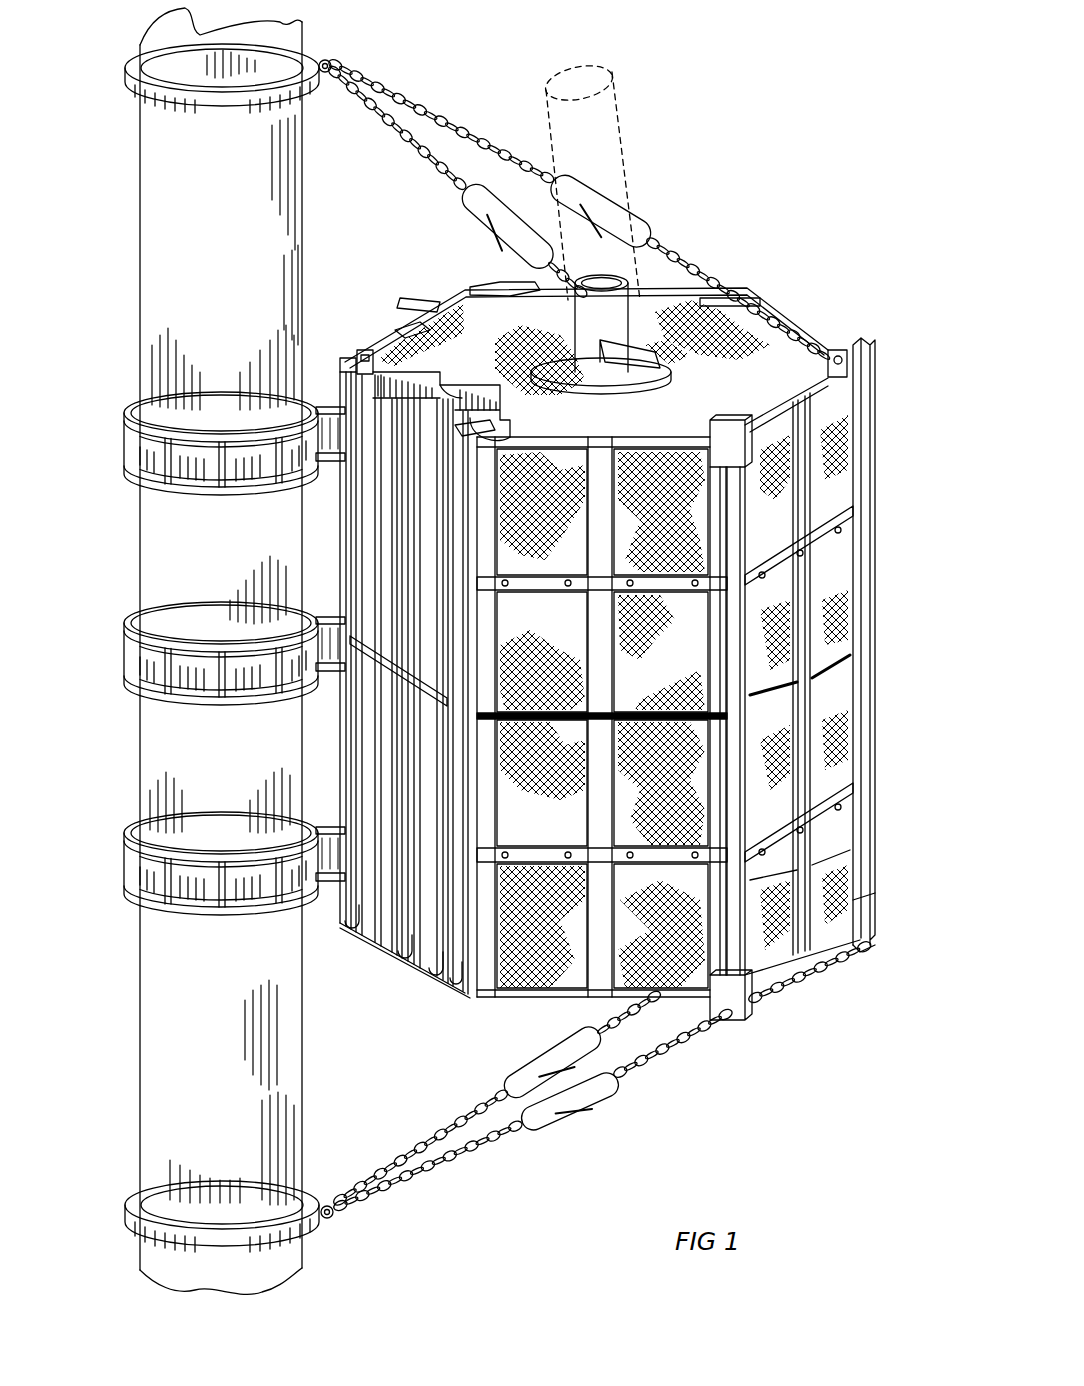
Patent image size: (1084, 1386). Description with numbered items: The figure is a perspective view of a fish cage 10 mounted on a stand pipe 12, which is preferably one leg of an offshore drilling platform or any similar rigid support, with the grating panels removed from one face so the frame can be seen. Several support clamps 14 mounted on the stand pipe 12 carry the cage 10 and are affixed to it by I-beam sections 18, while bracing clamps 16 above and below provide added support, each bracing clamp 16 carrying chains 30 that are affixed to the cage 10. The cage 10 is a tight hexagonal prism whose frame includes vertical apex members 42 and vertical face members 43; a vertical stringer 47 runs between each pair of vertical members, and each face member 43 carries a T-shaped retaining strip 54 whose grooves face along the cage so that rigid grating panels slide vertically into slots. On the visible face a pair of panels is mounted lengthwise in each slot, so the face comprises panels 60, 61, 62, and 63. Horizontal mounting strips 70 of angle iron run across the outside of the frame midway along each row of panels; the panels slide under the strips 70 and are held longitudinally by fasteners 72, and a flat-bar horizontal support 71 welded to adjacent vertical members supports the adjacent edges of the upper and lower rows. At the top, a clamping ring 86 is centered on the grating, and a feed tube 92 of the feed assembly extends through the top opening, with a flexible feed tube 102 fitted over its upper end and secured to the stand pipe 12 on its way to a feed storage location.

The fish cage 10 is at (830, 243).
The stand pipe 12 is at (157, 270).
The support clamps 14 is at (178, 635).
The bracing clamps 16 is at (192, 100).
The I-beam sections 18 is at (330, 445).
The chains 30 is at (690, 236).
The vertical apex members 42 is at (340, 355).
The vertical face members 43 is at (432, 945).
The vertical stringer 47 is at (355, 924).
The T-shaped retaining strip 54 is at (402, 948).
The grating panel 60 is at (558, 528).
The grating panel 61 is at (570, 834).
The grating panel 62 is at (664, 494).
The grating panel 63 is at (664, 768).
The horizontal mounting strips 70 is at (690, 592).
The horizontal support 71 is at (362, 690).
The fasteners 72 is at (858, 498).
The clamping ring 86 is at (636, 386).
The feed tube 92 is at (578, 327).
The flexible feed tube 102 is at (622, 103).